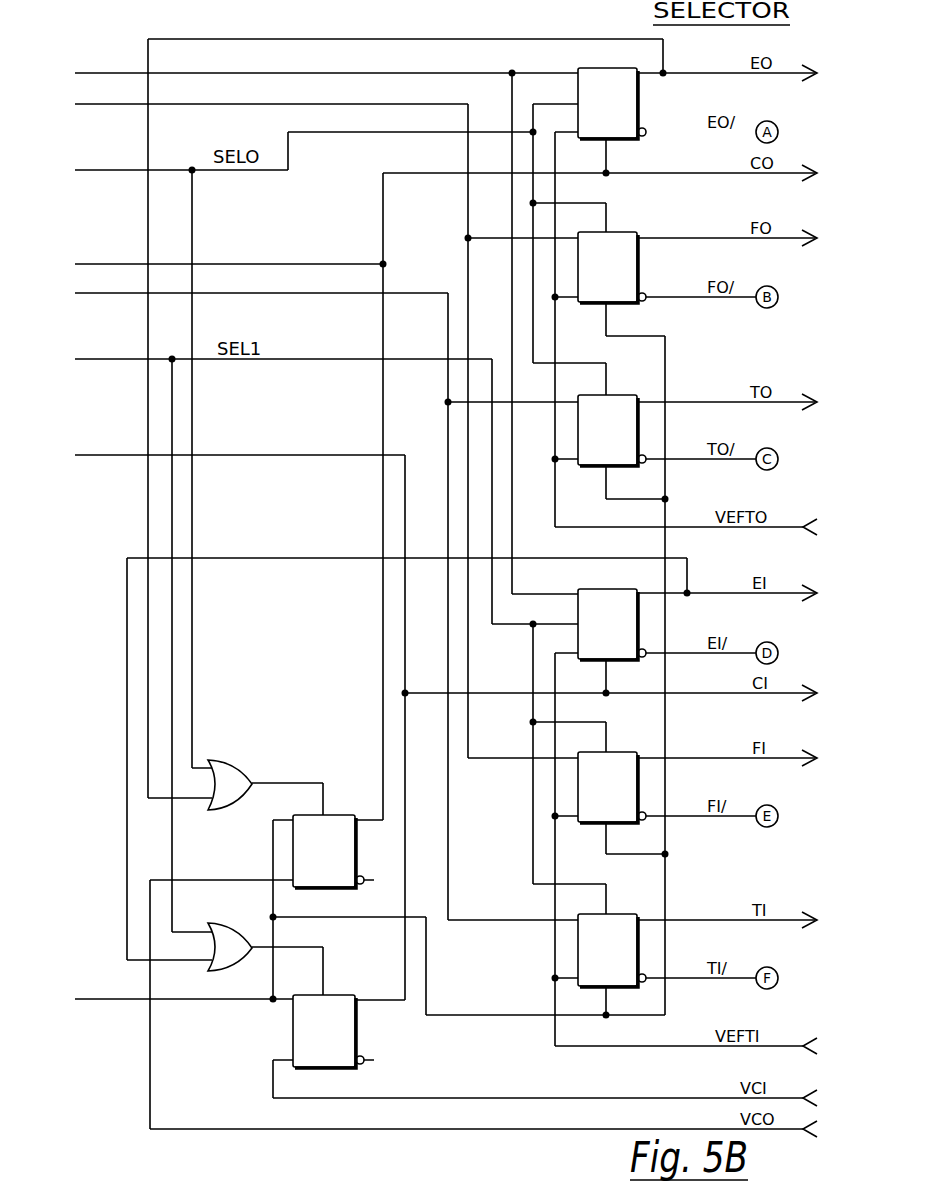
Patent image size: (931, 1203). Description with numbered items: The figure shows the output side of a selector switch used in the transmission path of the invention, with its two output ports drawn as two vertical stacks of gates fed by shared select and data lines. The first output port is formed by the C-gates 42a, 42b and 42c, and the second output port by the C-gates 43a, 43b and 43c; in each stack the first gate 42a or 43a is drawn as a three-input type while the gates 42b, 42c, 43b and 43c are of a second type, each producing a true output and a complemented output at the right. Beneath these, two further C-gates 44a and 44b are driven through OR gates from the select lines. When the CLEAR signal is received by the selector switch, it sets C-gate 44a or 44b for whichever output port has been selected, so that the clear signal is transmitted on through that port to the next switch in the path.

The C-gate 42a is at (638, 100).
The C-gate 42b is at (638, 264).
The C-gate 42c is at (638, 427).
The C-gate 43a is at (638, 621).
The C-gate 43b is at (638, 785).
The C-gate 43c is at (638, 947).
The C-gate 44a is at (356, 853).
The C-gate 44b is at (356, 1031).